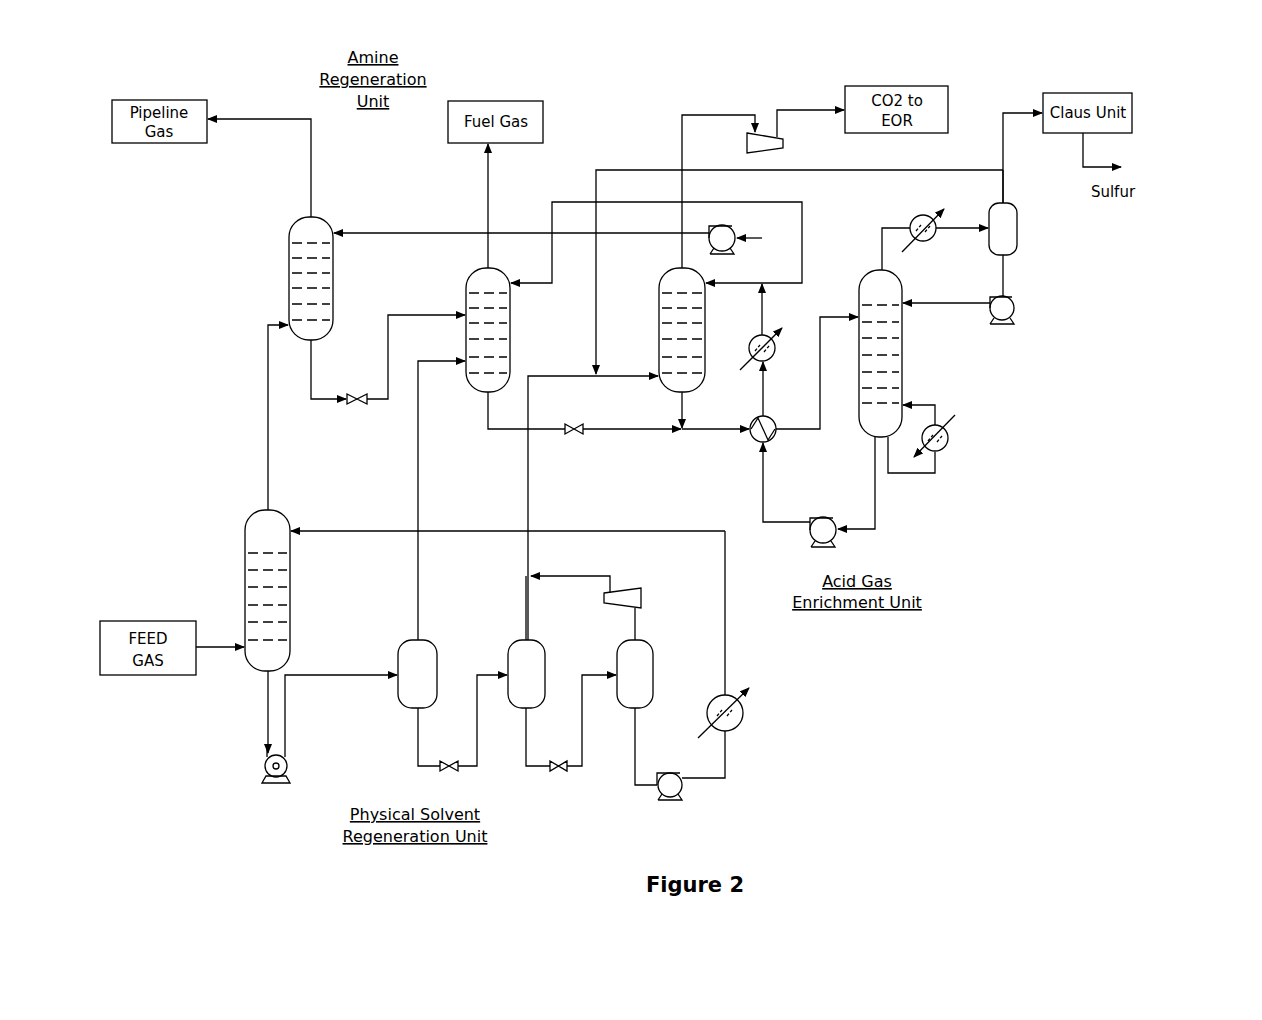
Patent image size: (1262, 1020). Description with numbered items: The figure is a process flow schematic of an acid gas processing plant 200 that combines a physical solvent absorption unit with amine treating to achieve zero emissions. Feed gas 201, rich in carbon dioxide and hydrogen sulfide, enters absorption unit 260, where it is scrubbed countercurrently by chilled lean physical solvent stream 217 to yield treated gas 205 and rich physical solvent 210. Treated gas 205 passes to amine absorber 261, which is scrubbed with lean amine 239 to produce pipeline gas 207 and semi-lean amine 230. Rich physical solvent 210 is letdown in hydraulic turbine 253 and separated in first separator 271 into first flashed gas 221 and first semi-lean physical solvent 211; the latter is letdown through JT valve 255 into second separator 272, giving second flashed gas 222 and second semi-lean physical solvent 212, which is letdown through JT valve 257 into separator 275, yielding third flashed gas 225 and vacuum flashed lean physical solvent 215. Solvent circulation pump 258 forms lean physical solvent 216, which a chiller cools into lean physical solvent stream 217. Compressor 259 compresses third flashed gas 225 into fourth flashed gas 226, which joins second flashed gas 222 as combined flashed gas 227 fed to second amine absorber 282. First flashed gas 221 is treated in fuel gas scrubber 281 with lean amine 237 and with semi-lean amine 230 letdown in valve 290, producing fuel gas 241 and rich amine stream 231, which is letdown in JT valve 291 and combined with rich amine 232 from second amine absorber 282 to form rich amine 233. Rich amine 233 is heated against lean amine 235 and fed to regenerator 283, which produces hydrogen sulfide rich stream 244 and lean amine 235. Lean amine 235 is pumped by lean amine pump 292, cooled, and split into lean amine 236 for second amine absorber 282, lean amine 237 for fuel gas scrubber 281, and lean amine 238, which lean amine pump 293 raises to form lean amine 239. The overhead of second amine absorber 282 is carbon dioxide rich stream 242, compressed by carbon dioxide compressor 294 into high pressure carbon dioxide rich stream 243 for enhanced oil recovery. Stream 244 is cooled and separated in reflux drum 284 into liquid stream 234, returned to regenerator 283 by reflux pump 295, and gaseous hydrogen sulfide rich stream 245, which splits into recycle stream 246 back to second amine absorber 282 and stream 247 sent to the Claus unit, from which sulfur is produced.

The acid gas processing plant 200 is at (1167, 76).
The feed gas 201 is at (232, 646).
The treated gas 205 is at (267, 372).
The pipeline gas 207 is at (290, 118).
The rich physical solvent 210 is at (266, 725).
The first semi-lean physical solvent 211 is at (418, 755).
The second semi-lean physical solvent 212 is at (526, 755).
The vacuum flashed lean physical solvent 215 is at (635, 772).
The lean physical solvent 216 is at (727, 768).
The lean physical solvent stream 217 is at (364, 530).
The first flashed gas 221 is at (417, 595).
The second flashed gas 222 is at (526, 622).
The third flashed gas 225 is at (639, 637).
The fourth flashed gas 226 is at (581, 575).
The combined flashed gas 227 is at (530, 373).
The semi-lean amine 230 is at (311, 374).
The rich amine stream 231 is at (486, 405).
The rich amine 232 is at (680, 414).
The rich amine 233 is at (738, 427).
The liquid stream 234 is at (1001, 288).
The lean amine 235 is at (874, 466).
The lean amine 236 is at (756, 284).
The lean amine 237 is at (804, 262).
The lean amine 238 is at (761, 228).
The lean amine 239 is at (430, 232).
The fuel gas 241 is at (488, 195).
The CO2 rich stream 242 is at (682, 112).
The high pressure CO2 rich stream 243 is at (797, 109).
The H2S rich stream 244 is at (882, 228).
The gaseous H2S rich stream 245 is at (1005, 192).
The H2S rich stream 246 is at (947, 170).
The H2S rich stream 247 is at (1007, 112).
The hydraulic turbine 253 is at (289, 752).
The JT valve 255 is at (463, 771).
The JT valve 257 is at (570, 771).
The solvent circulation pump 258 is at (676, 800).
The compressor 259 is at (645, 598).
The absorption unit 260 is at (245, 570).
The amine absorber 261 is at (336, 280).
The first separator 271 is at (438, 650).
The second separator 272 is at (546, 650).
The separator 275 is at (656, 665).
The fuel gas scrubber 281 is at (514, 310).
The second amine absorber 282 is at (658, 283).
The regenerator 283 is at (905, 352).
The reflux drum 284 is at (1016, 250).
The valve 290 is at (362, 404).
The JT valve 291 is at (580, 434).
The lean amine pump 292 is at (838, 540).
The lean amine pump 293 is at (716, 228).
The CO2 compressor 294 is at (784, 145).
The reflux pump 295 is at (1012, 322).